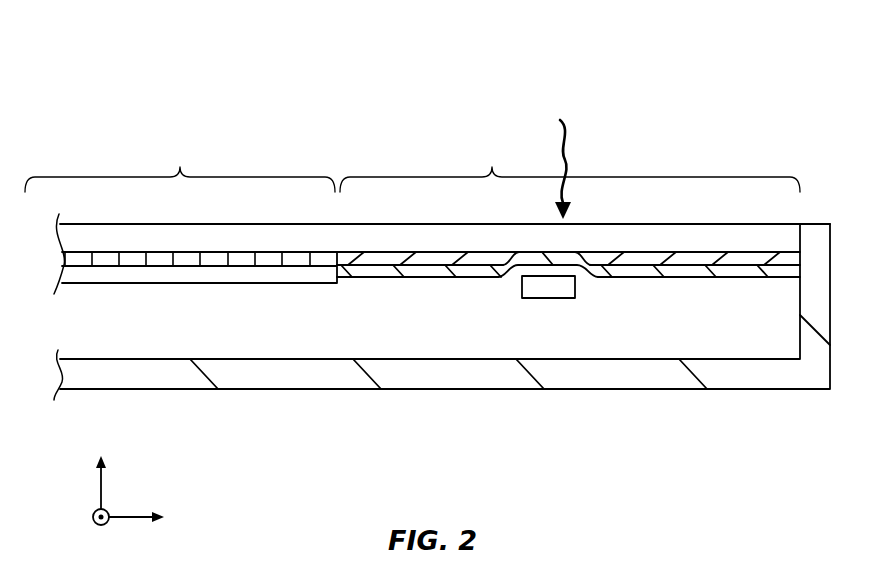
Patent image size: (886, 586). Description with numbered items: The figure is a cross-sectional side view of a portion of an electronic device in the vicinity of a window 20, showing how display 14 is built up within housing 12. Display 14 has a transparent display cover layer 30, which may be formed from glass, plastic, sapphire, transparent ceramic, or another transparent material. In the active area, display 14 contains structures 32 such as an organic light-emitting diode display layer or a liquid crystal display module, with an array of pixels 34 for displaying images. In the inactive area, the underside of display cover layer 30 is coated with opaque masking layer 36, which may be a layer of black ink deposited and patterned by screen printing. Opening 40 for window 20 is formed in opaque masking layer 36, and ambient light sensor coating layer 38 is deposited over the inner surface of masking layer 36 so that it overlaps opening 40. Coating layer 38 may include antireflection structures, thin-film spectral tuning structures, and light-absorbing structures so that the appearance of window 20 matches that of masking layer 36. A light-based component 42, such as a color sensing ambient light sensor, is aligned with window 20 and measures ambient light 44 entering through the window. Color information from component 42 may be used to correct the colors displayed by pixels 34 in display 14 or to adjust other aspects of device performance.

The housing 12 is at (340, 391).
The display 14 is at (226, 90).
The window 20 is at (586, 213).
The display cover layer 30 is at (113, 237).
The display structures 32 is at (47, 252).
The pixels 34 is at (220, 257).
The opaque masking layer 36 is at (390, 254).
The ambient light sensor coating layer 38 is at (434, 273).
The opening 40 is at (587, 249).
The component 42 is at (596, 291).
The ambient light 44 is at (570, 140).